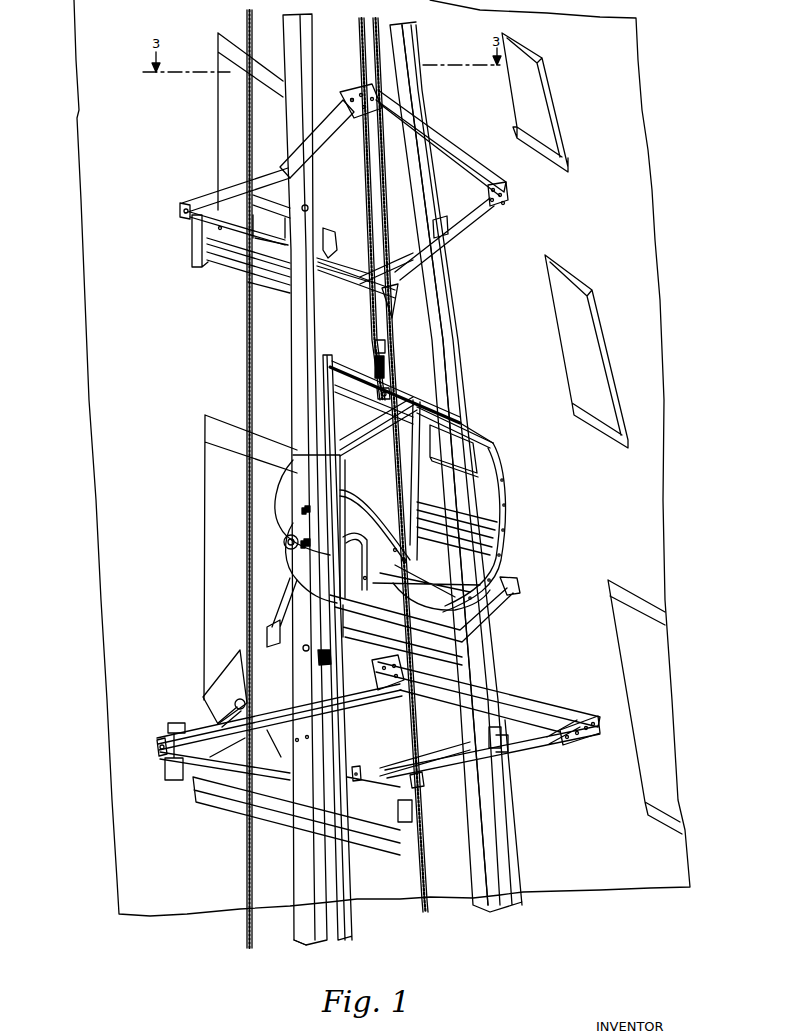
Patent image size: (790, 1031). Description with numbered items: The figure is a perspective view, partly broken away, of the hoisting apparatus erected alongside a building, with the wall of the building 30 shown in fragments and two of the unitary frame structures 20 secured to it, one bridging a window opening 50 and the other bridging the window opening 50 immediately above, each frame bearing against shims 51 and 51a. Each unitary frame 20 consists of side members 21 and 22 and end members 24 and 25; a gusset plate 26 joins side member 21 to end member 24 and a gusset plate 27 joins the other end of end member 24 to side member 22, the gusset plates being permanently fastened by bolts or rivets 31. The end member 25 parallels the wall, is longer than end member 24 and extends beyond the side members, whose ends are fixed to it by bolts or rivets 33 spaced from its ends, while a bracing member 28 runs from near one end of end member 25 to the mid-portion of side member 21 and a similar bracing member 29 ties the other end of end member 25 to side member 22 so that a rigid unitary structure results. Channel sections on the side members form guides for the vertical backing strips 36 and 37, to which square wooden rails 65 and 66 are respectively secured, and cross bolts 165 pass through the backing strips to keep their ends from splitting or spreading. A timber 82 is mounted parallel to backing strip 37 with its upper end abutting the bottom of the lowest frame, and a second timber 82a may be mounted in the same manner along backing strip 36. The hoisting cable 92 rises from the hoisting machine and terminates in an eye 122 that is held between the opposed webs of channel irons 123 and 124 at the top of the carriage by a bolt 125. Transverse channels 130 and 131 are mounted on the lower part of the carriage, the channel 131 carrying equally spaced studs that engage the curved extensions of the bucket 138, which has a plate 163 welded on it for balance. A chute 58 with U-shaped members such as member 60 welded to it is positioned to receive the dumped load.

The unitary frame structure 20 is at (448, 148).
The side member 21 is at (470, 234).
The side member 22 is at (343, 135).
The end member 24 is at (471, 168).
The end member 25 is at (330, 258).
The gusset plate 26 is at (488, 190).
The gusset plate 27 is at (354, 113).
The bracing member 28 is at (393, 300).
The bracing member 29 is at (204, 186).
The wall of the building 30 is at (598, 483).
The bolts or rivets 31 is at (344, 98).
The bolts or rivets 33 is at (209, 240).
The backing strip 36 is at (302, 334).
The backing strip 37 is at (448, 323).
The window opening 50 is at (240, 124).
The shim 51 is at (374, 345).
The shim 51a is at (200, 266).
The chute 58 is at (272, 202).
The U-shaped member 60 is at (247, 704).
The rail 65 is at (323, 346).
The rail 66 is at (430, 350).
The timber 82 is at (505, 778).
The timber 82a is at (303, 849).
The hoisting cable 92 is at (360, 39).
The eye 122 is at (376, 380).
The channel iron 123 is at (364, 412).
The channel iron 124 is at (400, 392).
The bolt 125 is at (391, 396).
The channel 130 is at (520, 584).
The channel 131 is at (387, 515).
The bucket 138 is at (492, 500).
The plate 163 is at (467, 432).
The cross bolts 165 is at (332, 656).